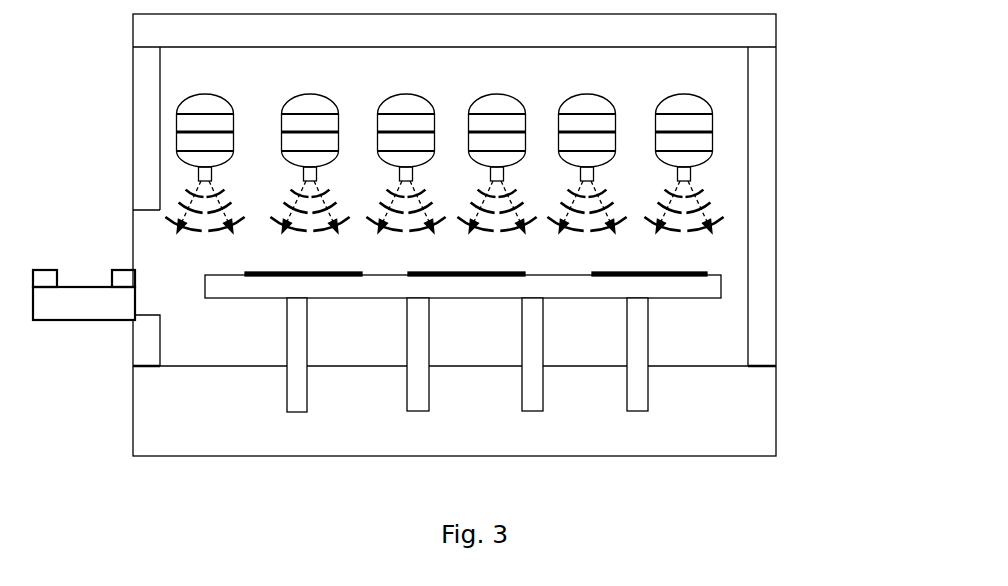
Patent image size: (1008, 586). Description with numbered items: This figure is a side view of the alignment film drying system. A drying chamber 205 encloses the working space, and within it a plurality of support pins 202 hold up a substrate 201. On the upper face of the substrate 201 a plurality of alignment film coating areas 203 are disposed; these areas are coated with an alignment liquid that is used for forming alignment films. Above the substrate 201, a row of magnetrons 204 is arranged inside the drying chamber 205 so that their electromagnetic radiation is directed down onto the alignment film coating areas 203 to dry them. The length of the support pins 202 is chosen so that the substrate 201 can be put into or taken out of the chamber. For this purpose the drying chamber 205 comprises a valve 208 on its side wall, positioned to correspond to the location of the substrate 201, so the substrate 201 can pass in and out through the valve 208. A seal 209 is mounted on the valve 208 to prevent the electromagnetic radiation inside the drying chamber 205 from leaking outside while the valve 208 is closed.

The substrate 201 is at (693, 288).
The support pins 202 is at (638, 342).
The alignment film coating areas 203 is at (660, 272).
The magnetrons 204 is at (700, 122).
The drying chamber 205 is at (762, 158).
The valve 208 is at (102, 322).
The seal 209 is at (60, 285).